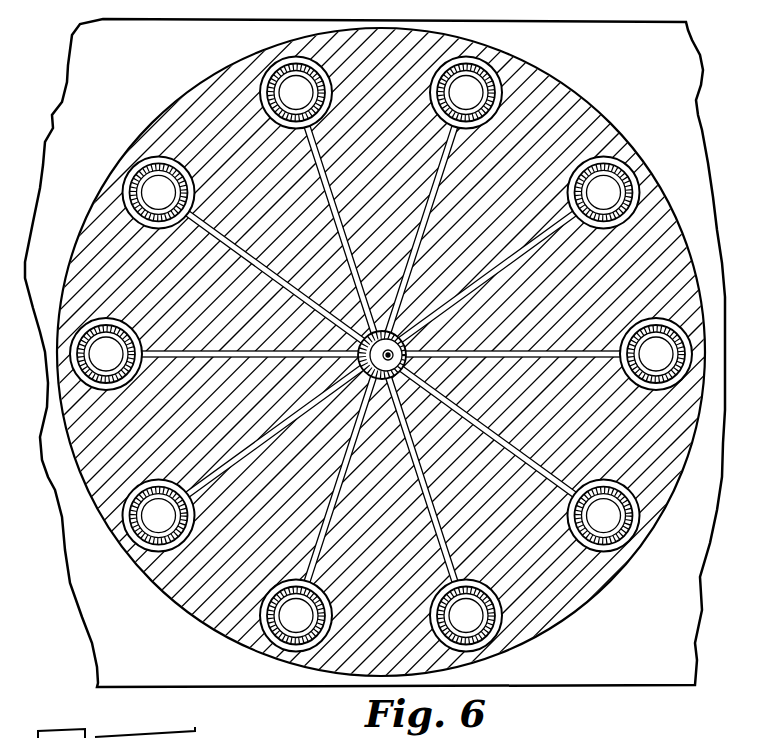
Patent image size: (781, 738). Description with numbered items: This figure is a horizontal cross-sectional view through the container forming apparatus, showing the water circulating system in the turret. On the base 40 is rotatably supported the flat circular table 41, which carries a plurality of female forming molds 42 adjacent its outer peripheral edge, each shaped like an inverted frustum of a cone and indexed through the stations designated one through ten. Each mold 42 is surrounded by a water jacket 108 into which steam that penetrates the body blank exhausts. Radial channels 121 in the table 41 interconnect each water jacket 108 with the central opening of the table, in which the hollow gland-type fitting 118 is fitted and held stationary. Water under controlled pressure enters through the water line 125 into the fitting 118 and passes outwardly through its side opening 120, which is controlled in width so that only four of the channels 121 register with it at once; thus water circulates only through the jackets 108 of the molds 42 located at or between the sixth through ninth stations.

The base 40 is at (612, 687).
The table 41 is at (612, 585).
The female forming mold 42 is at (282, 66).
The water jacket 108 is at (262, 82).
The gland-type fitting 118 is at (372, 333).
The side opening 120 is at (395, 360).
The radial channel 121 is at (329, 190).
The water line 125 is at (408, 350).